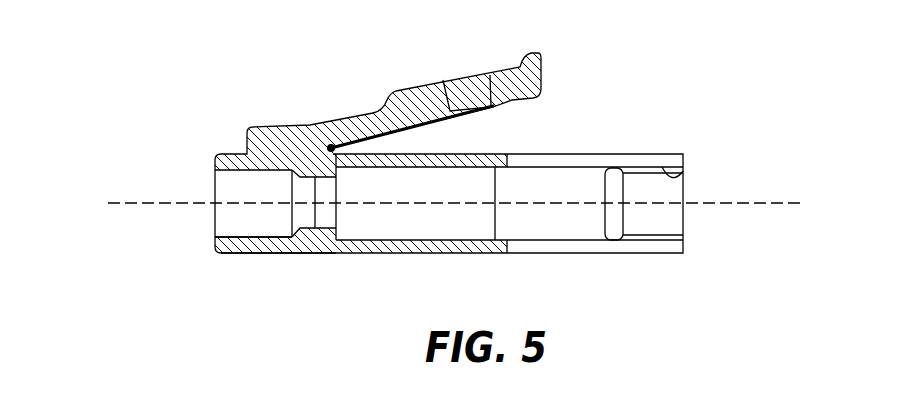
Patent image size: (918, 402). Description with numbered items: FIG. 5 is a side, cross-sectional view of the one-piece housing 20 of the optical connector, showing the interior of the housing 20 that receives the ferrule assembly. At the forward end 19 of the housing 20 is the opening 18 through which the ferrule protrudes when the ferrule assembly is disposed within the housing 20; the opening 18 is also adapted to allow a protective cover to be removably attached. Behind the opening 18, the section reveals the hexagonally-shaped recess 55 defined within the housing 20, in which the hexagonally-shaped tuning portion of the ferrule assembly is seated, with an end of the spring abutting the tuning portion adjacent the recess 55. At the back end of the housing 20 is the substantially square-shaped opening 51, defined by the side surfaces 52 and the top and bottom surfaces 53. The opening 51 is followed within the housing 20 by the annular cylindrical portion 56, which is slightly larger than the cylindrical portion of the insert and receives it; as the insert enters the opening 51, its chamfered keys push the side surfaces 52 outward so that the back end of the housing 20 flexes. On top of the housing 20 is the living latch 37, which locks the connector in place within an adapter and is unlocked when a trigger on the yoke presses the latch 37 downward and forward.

The one-piece housing 20 is at (633, 48).
The living latch 37 is at (462, 78).
The opening 18 is at (215, 188).
The forward end 19 is at (221, 254).
The hexagonally-shaped recess 55 is at (319, 230).
The annular cylindrical portion 56 is at (545, 229).
The side surfaces 52 is at (686, 216).
The top and bottom surfaces 53 is at (643, 240).
The substantially square-shaped opening 51 is at (702, 191).